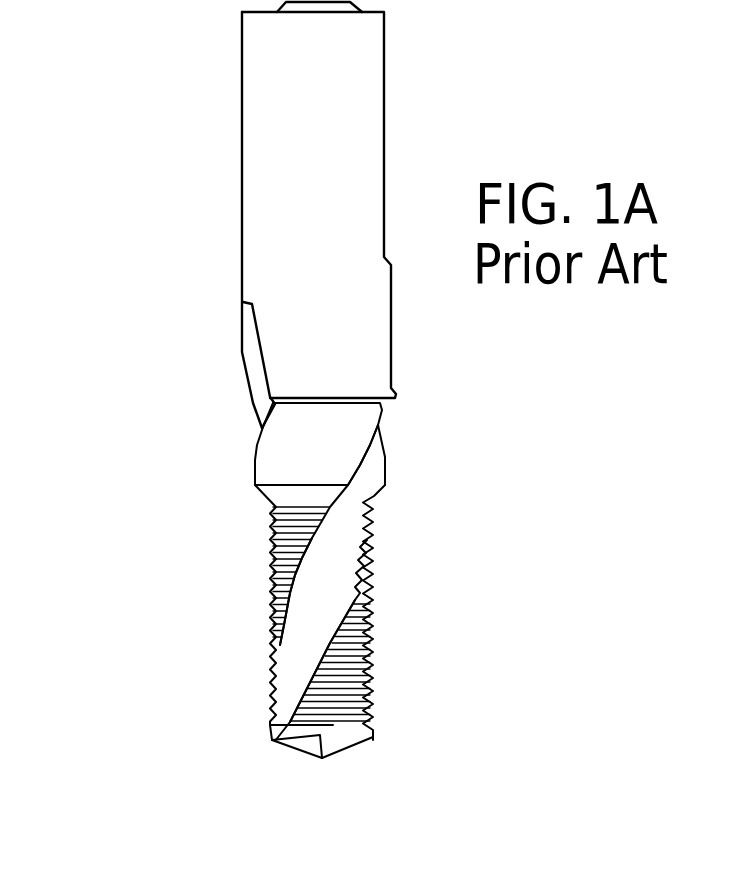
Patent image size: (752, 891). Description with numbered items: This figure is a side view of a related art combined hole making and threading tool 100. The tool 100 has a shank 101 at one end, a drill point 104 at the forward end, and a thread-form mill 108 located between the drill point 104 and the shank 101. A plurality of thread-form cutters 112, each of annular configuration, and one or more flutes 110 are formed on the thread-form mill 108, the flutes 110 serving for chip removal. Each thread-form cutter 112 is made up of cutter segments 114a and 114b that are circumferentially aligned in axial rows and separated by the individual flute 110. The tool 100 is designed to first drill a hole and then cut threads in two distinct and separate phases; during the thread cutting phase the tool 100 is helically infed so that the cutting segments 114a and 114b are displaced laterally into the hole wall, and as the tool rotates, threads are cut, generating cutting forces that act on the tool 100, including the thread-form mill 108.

The combined hole making and threading tool 100 is at (212, 41).
The shank 101 is at (365, 104).
The drill point 104 is at (343, 753).
The thread-form mill 108 is at (415, 632).
The flute 110 is at (355, 707).
The thread-form cutter 112 is at (372, 583).
The cutter segment 114a is at (372, 545).
The cutter segment 114b is at (268, 545).